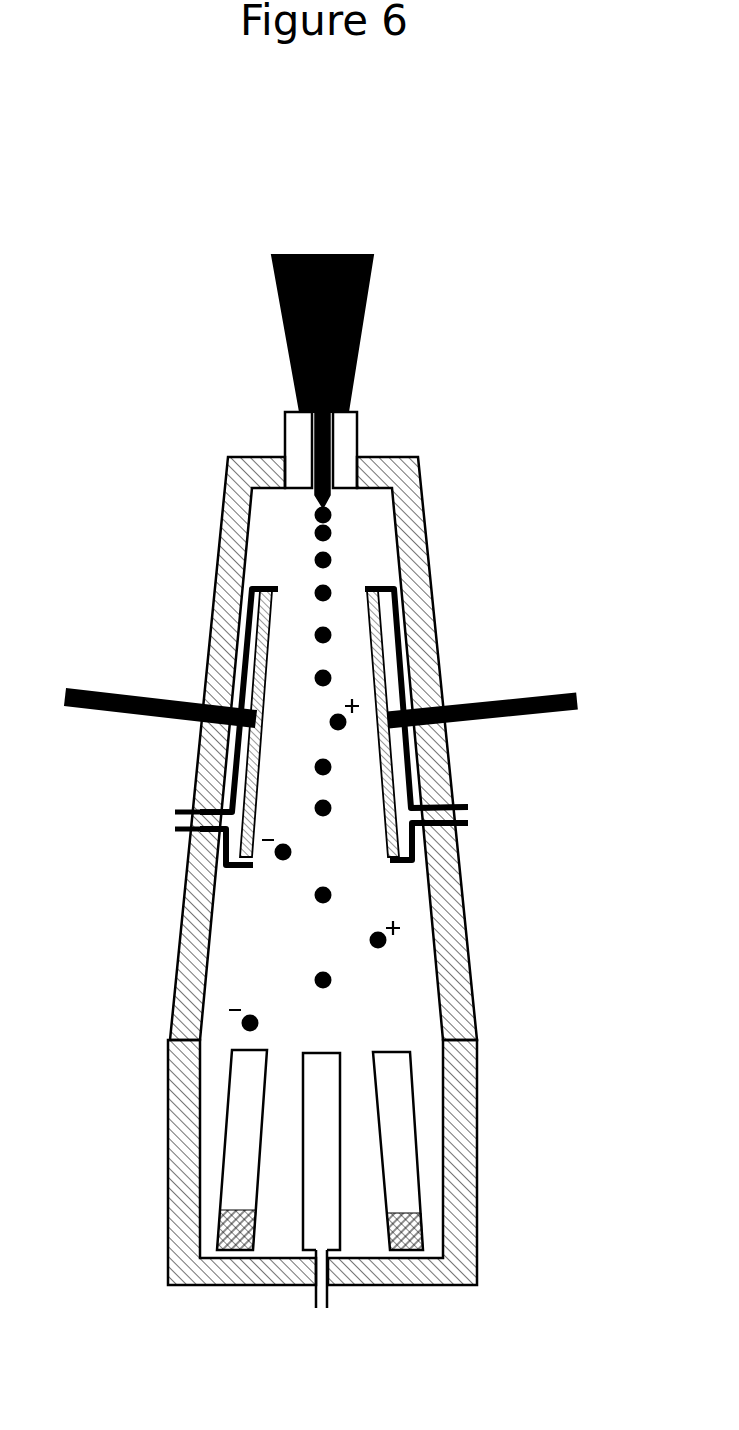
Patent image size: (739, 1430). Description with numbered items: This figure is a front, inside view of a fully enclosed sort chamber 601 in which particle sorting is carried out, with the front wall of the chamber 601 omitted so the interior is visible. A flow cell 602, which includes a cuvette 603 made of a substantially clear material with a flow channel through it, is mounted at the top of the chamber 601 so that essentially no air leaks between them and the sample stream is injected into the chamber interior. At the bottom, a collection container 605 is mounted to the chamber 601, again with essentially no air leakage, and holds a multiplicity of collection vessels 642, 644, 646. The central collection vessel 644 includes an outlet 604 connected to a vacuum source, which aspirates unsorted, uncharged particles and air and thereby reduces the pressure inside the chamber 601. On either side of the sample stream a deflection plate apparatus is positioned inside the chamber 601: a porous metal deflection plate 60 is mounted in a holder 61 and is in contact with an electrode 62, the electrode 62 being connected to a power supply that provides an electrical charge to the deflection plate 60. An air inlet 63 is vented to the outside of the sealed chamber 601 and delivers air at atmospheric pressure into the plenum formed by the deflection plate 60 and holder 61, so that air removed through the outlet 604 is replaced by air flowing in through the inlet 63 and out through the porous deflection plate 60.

The chamber 601 is at (435, 533).
The flow cell 602 is at (372, 372).
The cuvette 603 is at (285, 449).
The outlet 604 is at (333, 1315).
The collection container 605 is at (483, 1113).
The deflection plate 60 is at (258, 670).
The holder 61 is at (250, 572).
The electrode 62 is at (158, 723).
The air inlet 63 is at (168, 820).
The collection vessel 642 is at (221, 1148).
The collection vessel 644 is at (298, 1150).
The right collection electrode 646 is at (424, 1152).